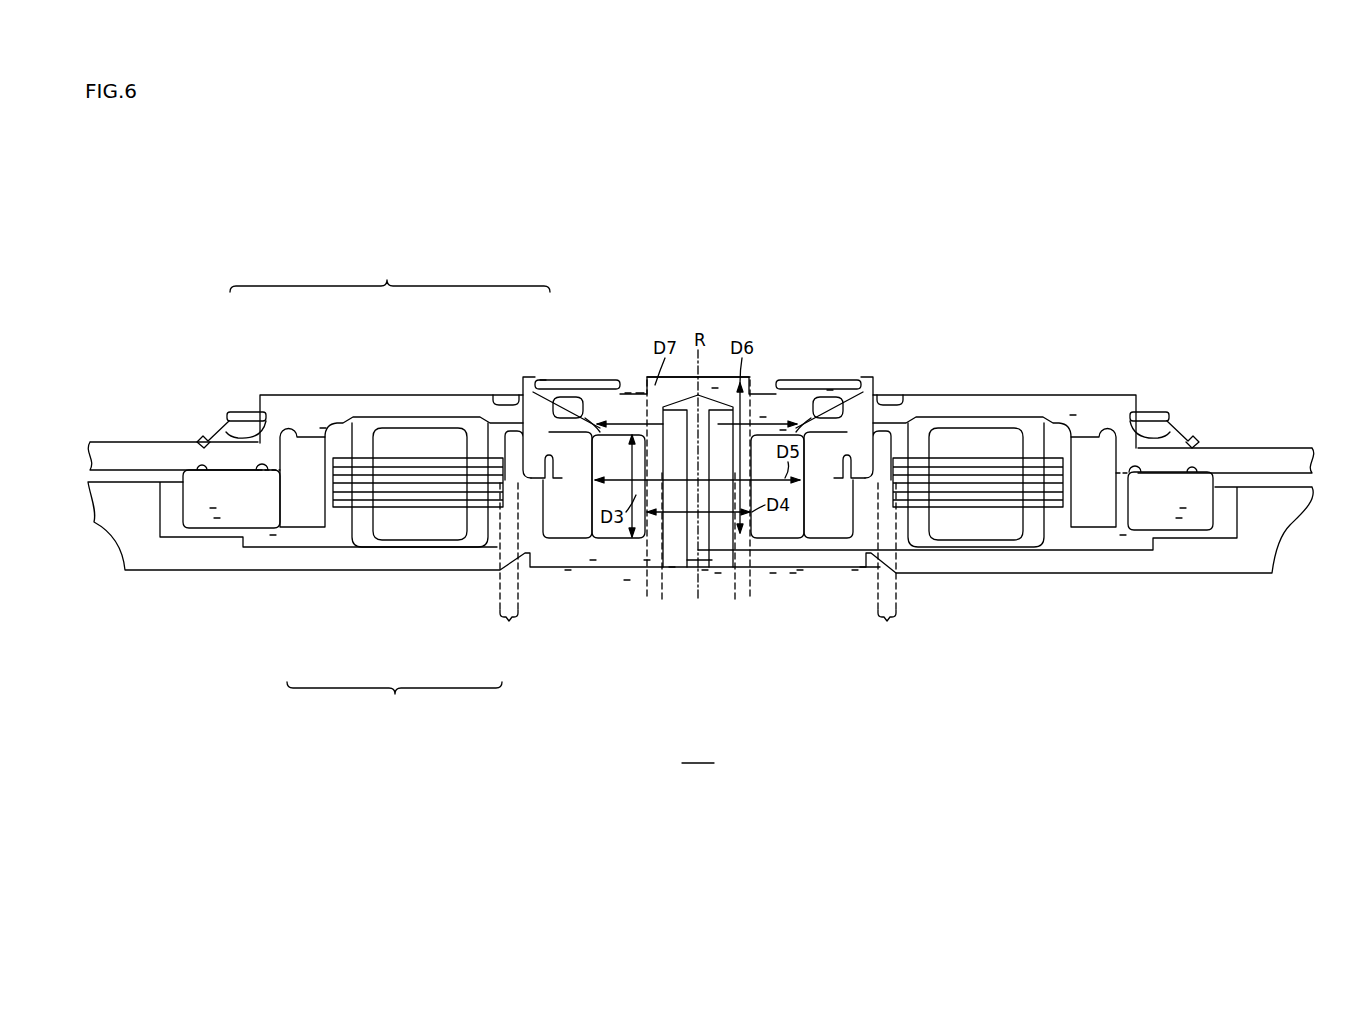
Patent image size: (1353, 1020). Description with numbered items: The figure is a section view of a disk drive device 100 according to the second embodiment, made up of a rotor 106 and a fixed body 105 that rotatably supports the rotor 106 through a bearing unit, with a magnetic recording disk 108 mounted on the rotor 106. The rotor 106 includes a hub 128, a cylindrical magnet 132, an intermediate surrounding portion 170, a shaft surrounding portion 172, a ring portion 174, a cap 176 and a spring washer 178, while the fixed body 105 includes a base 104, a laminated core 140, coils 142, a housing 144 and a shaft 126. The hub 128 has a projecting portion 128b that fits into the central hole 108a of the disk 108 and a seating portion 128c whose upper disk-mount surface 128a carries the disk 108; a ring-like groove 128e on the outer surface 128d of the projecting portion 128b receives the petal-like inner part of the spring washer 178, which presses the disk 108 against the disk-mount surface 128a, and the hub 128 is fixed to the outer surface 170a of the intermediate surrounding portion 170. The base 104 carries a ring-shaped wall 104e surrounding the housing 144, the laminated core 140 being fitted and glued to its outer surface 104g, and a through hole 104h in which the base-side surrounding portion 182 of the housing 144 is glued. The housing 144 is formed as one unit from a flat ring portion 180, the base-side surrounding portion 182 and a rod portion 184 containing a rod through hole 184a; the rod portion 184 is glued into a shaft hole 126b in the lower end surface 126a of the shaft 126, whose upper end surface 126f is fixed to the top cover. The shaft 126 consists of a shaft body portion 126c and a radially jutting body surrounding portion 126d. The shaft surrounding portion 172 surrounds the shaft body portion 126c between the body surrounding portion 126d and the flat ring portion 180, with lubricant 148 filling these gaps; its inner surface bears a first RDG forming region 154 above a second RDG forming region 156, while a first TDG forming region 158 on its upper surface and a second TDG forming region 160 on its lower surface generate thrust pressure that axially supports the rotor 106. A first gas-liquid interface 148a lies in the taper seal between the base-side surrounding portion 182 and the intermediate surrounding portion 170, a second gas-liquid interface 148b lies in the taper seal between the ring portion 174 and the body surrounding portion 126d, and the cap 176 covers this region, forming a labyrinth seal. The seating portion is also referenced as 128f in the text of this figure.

The disk drive device 100 is at (698, 752).
The base 104 is at (310, 560).
The ring-shaped wall 104e is at (702, 565).
The outer surface of the ring-shaped wall 104g is at (500, 457).
The through hole 104h is at (870, 570).
The fixed body 105 is at (394, 699).
The rotor 106 is at (683, 352).
The magnetic recording disk 108 is at (108, 440).
The central hole 108a is at (245, 540).
The shaft 126 is at (445, 510).
The lower end surface of the shaft 126a is at (760, 570).
The shaft hole 126b is at (715, 392).
The shaft body portion 126c is at (708, 380).
The body surrounding portion 126d is at (640, 393).
The upper end surface of the shaft 126f is at (685, 378).
The hub 128 is at (380, 405).
The disk-mount surface 128a is at (213, 510).
The projecting portion 128b is at (293, 527).
The seating portion 128c is at (217, 520).
The outer surface of the projecting portion 128d is at (237, 413).
The ring-like groove 128e is at (220, 422).
The magnet holder portion 128f is at (273, 537).
The cylindrical magnet 132 is at (323, 428).
The laminated core 140 is at (348, 505).
The coils 142 is at (410, 523).
The housing 144 is at (595, 482).
The lubricant 148 is at (605, 565).
The first gas-liquid interface 148a is at (698, 485).
The second gas-liquid interface 148b is at (600, 400).
The first RDG forming region 154 is at (672, 567).
The second RDG forming region 156 is at (647, 560).
The first TDG forming region 158 is at (763, 417).
The second TDG forming region 160 is at (627, 580).
The intermediate surrounding portion 170 is at (563, 443).
The outer surface of the intermediate surrounding portion 170a is at (582, 403).
The shaft surrounding portion 172 is at (587, 438).
The ring portion 174 is at (543, 380).
The cap 176 is at (617, 448).
The spring washer 178 is at (250, 413).
The flat ring portion 180 is at (593, 560).
The base-side surrounding portion 182 is at (568, 570).
The rod portion 184 is at (678, 573).
The rod through hole 184a is at (705, 570).